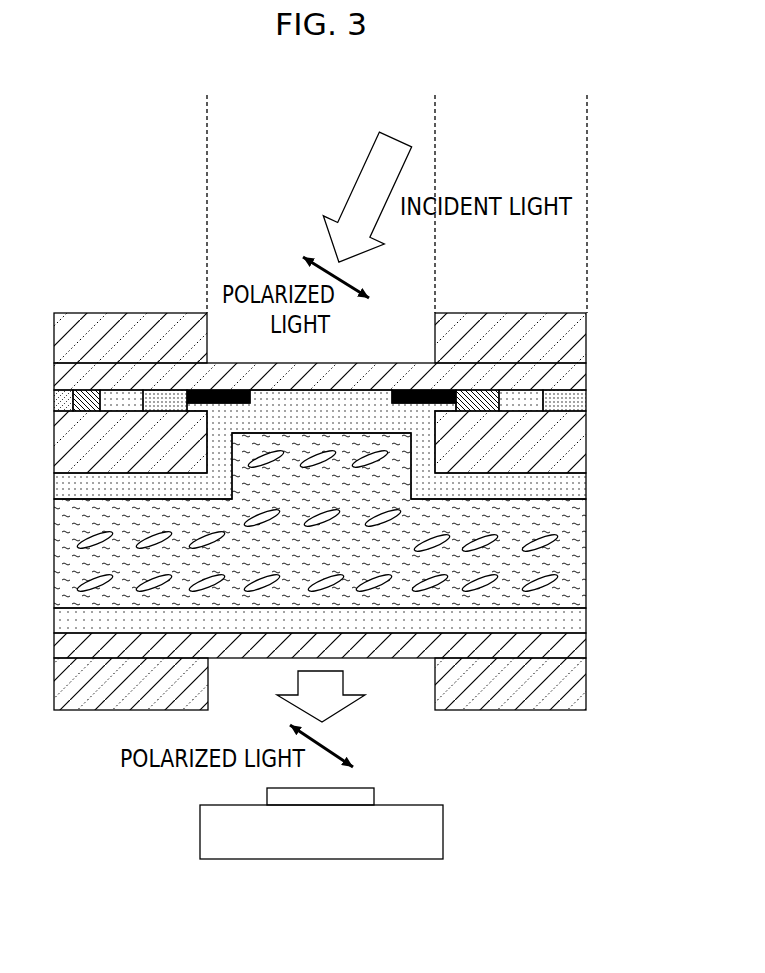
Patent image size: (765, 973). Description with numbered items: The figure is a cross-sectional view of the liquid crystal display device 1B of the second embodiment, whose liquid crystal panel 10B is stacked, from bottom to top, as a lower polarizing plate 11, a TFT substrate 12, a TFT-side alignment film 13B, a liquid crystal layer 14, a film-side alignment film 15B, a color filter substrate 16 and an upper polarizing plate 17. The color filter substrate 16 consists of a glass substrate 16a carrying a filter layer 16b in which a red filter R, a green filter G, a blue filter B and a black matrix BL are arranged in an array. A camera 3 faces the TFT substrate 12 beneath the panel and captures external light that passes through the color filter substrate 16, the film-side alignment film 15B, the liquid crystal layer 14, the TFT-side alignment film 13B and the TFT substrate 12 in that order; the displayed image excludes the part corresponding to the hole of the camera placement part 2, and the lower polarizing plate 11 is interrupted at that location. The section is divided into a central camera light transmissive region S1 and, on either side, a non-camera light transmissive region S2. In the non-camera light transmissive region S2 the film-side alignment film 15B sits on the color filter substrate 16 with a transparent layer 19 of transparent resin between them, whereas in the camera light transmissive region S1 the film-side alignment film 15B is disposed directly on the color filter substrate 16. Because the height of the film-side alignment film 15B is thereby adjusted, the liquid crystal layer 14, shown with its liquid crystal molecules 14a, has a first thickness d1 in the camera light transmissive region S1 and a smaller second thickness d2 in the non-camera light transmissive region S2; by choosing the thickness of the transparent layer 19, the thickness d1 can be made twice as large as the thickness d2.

The liquid crystal display device 1B is at (106, 236).
The liquid crystal panel 10B is at (508, 311).
The upper polarizing plate 17 is at (586, 340).
The color filter substrate 16 is at (655, 365).
The glass substrate 16a is at (586, 377).
The filter layer 16b is at (352, 340).
The red filter R is at (78, 400).
The green filter G is at (120, 400).
The blue filter B is at (166, 400).
The black matrix BL is at (231, 396).
The transparent layer 19 is at (586, 443).
The film-side alignment film 15B is at (586, 488).
The liquid crystal layer 14 is at (586, 548).
The liquid crystal molecules 14a is at (555, 577).
The TFT-side alignment film 13B is at (586, 622).
The TFT substrate 12 is at (586, 648).
The lower polarizing plate 11 is at (586, 686).
The camera placement part 2 is at (434, 695).
The camera 3 is at (443, 833).
The camera light transmissive region S1 is at (435, 102).
The non-camera light transmissive region S2 is at (207, 102).
The thickness of the first part of the liquid crystal layer d1 is at (292, 434).
The thickness of the second part of the liquid crystal layer d2 is at (123, 500).